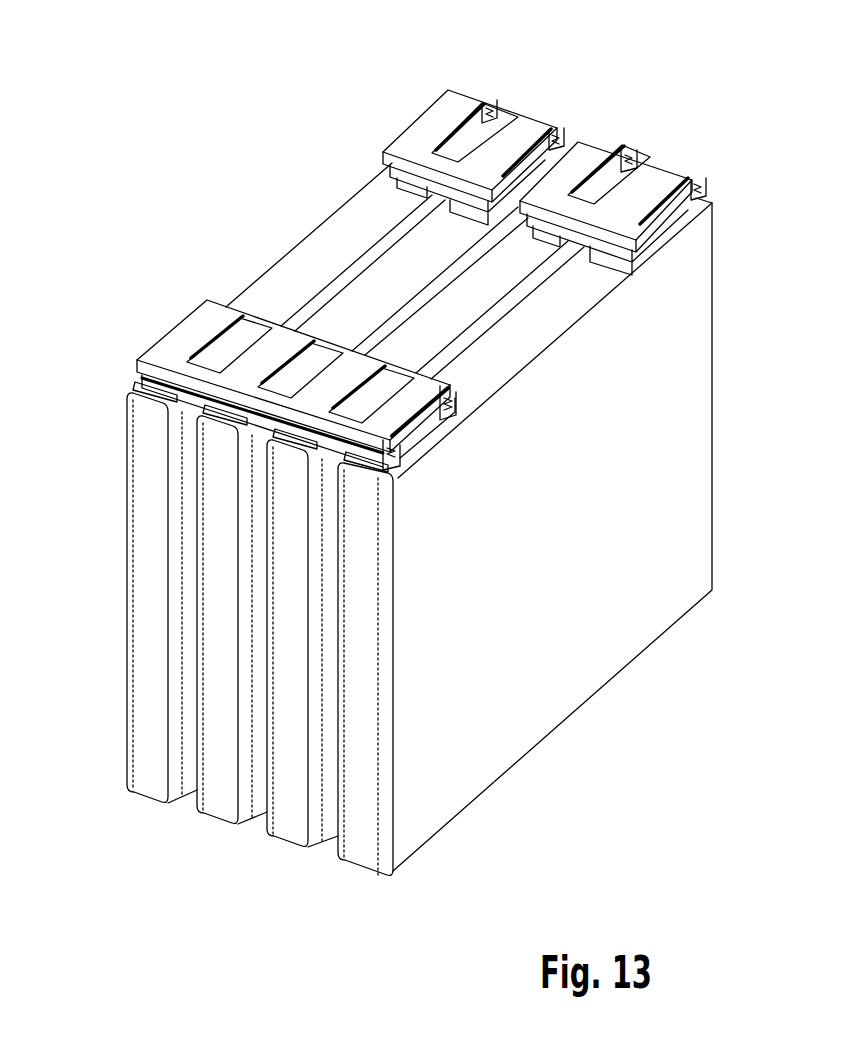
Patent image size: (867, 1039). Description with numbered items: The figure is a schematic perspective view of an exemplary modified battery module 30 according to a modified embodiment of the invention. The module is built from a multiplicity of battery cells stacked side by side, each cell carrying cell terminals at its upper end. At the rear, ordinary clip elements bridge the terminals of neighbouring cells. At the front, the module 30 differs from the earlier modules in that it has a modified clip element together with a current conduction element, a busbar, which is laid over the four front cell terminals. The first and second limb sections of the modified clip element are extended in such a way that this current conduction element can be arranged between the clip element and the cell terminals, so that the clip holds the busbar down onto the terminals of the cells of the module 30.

The modified battery module 30 is at (88, 287).